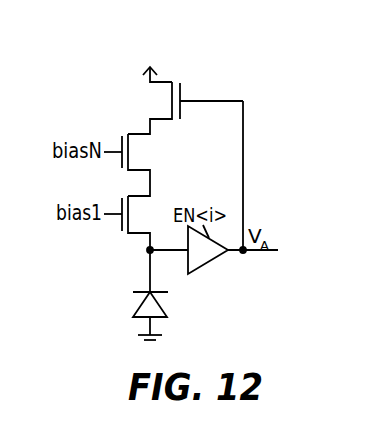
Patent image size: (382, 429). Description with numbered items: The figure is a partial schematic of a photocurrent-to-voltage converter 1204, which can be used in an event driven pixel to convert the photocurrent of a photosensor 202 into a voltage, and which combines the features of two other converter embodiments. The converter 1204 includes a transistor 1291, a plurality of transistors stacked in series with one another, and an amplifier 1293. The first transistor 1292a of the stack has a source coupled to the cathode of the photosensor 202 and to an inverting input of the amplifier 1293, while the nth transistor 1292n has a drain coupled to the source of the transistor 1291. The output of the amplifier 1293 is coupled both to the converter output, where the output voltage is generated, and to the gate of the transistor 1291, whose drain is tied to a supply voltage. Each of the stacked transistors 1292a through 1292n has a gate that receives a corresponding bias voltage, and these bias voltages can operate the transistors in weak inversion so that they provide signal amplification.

The transistor 1291 is at (166, 73).
The photocurrent-to-voltage converter 1204 is at (266, 70).
The nth transistor 1292n is at (125, 124).
The first transistor 1292a is at (130, 242).
The amplifier 1293 is at (200, 267).
The photosensor 202 is at (167, 306).